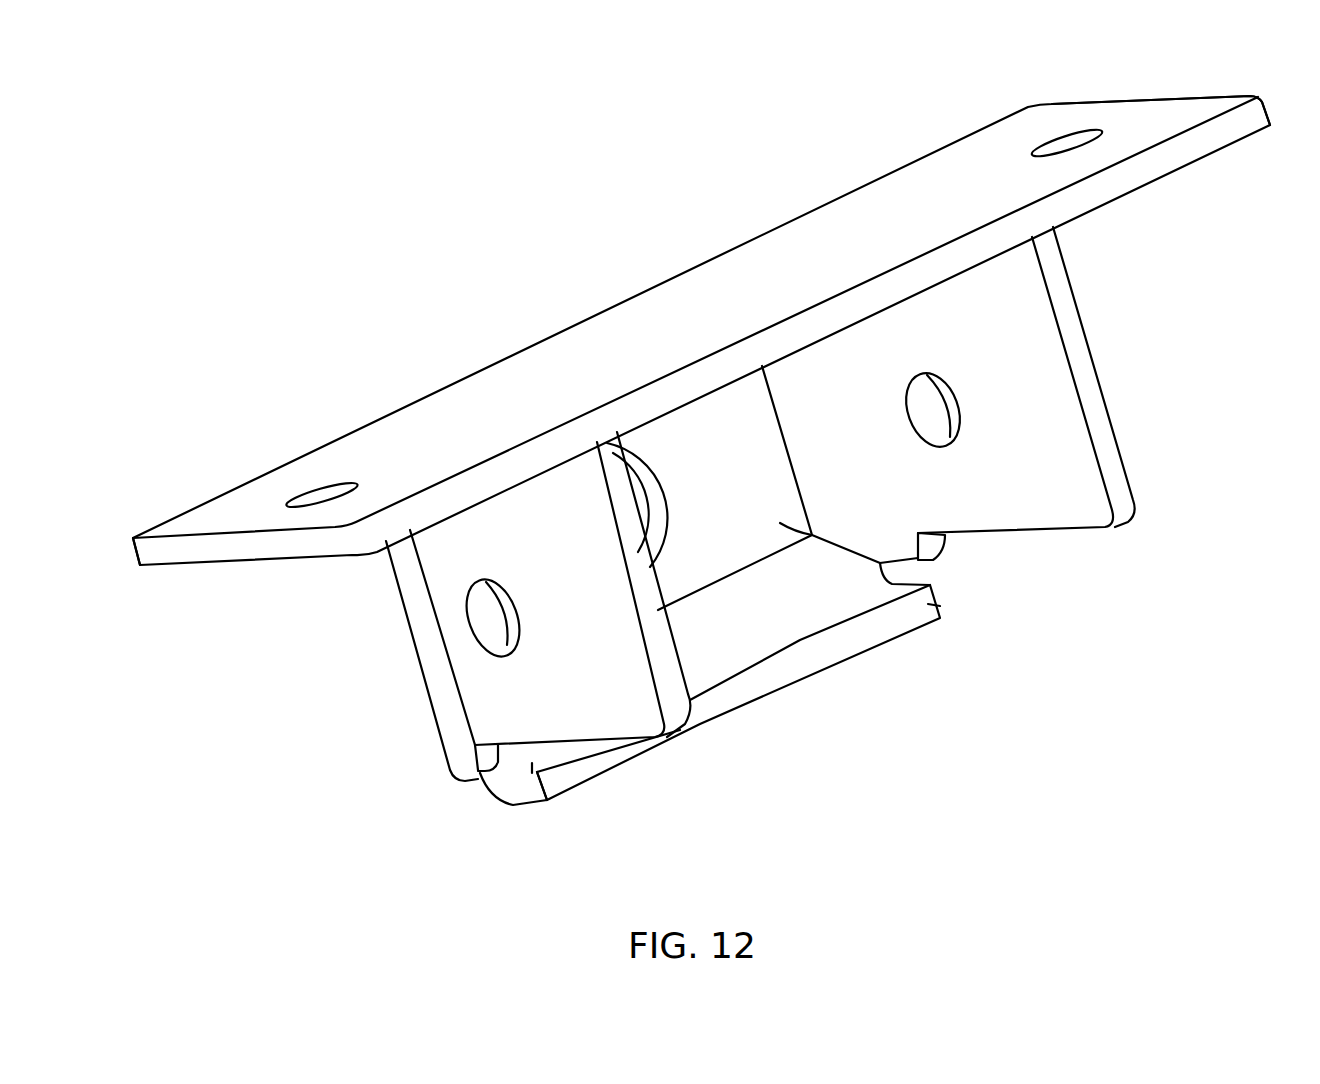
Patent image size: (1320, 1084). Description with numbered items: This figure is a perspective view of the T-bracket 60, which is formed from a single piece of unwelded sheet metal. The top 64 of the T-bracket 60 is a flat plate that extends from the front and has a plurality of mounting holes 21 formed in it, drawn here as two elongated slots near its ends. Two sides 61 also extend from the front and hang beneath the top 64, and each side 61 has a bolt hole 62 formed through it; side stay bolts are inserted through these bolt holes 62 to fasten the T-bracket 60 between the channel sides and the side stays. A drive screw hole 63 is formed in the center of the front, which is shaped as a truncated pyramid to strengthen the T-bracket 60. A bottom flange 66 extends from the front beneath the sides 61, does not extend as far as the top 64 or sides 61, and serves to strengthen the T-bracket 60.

The T-bracket 60 is at (848, 200).
The top 64 is at (1196, 105).
The mounting holes 21 is at (340, 492).
The sides 61 is at (1081, 377).
The bolt hole 62 is at (497, 646).
The drive screw hole 63 is at (654, 511).
The bottom flange 66 is at (941, 600).